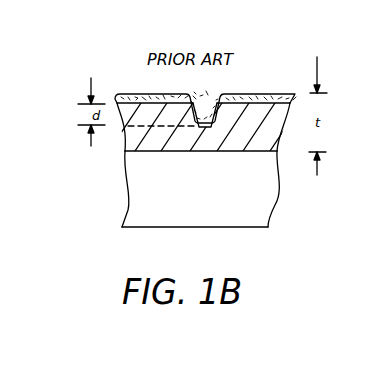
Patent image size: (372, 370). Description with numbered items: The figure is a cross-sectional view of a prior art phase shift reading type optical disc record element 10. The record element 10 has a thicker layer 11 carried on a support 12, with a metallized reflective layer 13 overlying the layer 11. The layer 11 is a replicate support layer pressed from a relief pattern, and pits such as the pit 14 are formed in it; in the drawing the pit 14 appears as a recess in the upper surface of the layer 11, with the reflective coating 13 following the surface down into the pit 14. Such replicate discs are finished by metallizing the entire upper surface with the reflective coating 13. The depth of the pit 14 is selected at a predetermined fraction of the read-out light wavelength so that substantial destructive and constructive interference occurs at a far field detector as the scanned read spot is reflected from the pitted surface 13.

The record element 10 is at (287, 183).
The thicker layer 11 is at (126, 144).
The support 12 is at (133, 192).
The metallized reflective layer 13 is at (273, 94).
The pit 14 is at (207, 102).